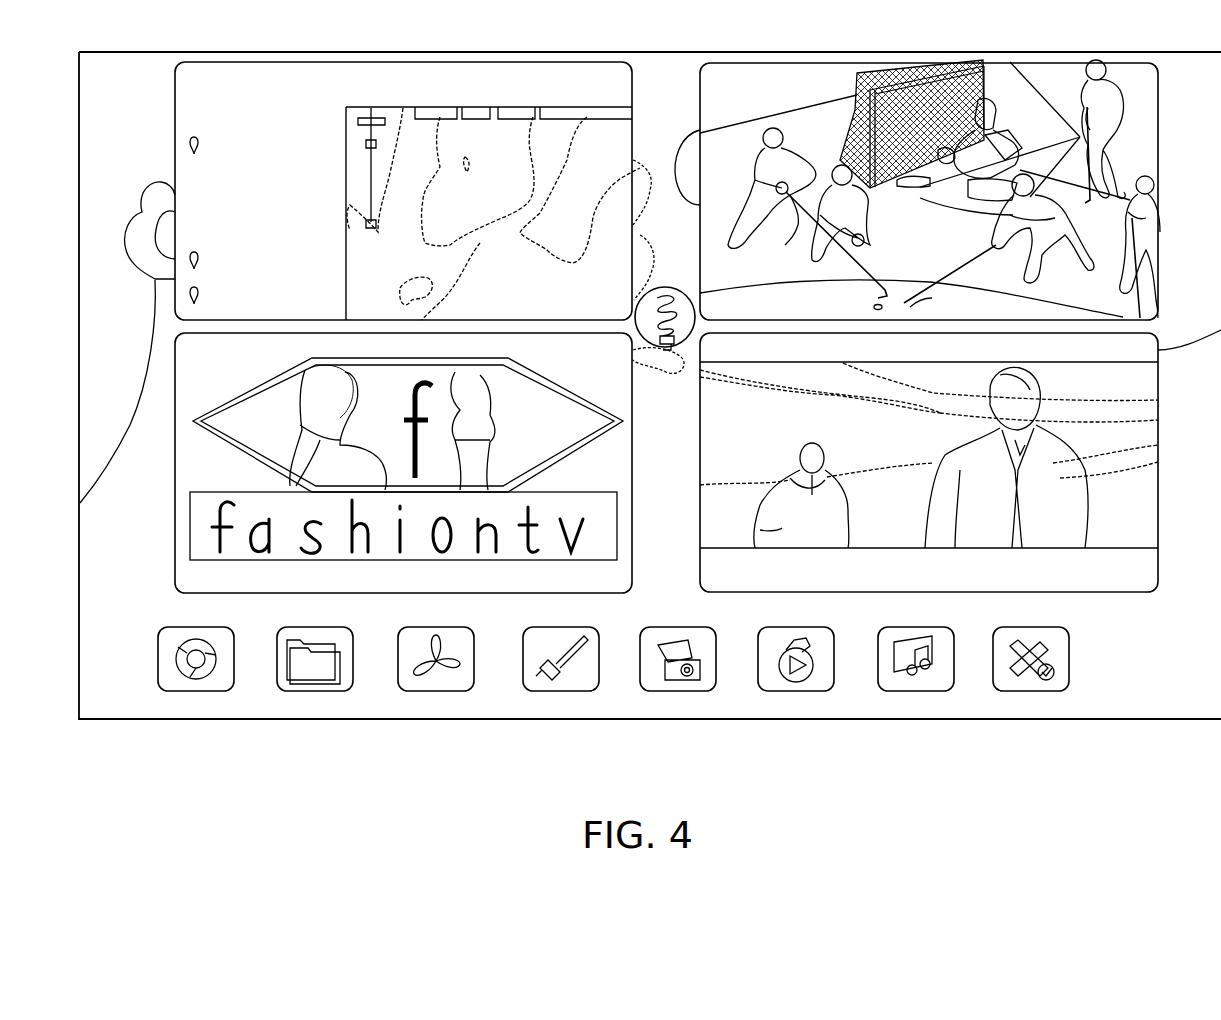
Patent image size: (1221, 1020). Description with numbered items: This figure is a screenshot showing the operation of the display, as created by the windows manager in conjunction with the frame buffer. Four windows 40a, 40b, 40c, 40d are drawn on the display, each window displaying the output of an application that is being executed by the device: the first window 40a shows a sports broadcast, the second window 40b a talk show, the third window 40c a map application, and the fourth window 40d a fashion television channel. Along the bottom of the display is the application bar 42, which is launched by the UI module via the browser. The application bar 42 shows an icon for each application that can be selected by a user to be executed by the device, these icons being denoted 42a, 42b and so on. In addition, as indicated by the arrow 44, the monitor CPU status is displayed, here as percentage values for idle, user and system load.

The window 40a is at (690, 102).
The window 40b is at (690, 502).
The window 40c is at (158, 102).
The window 40d is at (157, 502).
The application bar 42 is at (581, 702).
The icon 42a is at (195, 690).
The icon 42b is at (306, 688).
The monitor CPU status 44 is at (1112, 634).